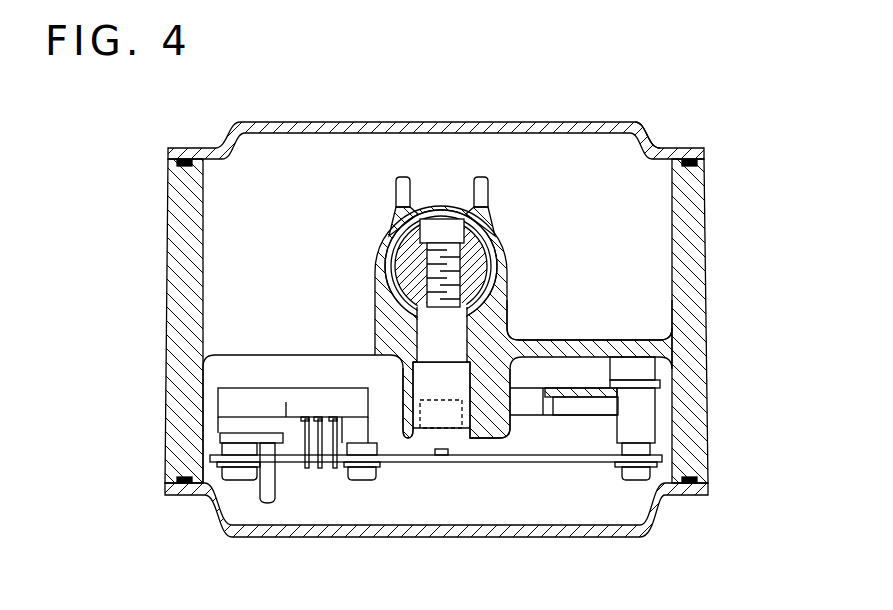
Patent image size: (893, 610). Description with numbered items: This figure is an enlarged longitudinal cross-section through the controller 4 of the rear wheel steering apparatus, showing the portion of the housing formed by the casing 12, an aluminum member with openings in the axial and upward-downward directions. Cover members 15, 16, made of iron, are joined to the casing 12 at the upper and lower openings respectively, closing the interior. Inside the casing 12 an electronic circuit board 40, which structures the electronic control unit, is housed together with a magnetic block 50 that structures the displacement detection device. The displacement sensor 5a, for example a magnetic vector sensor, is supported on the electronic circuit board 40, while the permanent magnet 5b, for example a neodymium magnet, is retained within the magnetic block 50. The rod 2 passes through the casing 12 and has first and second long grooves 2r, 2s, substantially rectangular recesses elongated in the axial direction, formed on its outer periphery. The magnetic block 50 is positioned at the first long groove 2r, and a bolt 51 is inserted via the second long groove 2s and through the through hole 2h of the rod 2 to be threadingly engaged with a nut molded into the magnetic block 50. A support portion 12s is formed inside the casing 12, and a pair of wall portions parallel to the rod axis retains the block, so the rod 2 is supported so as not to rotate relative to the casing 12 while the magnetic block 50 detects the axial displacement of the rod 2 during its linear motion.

The rod 2 is at (416, 196).
The through hole 2h is at (406, 153).
The second long groove 2s is at (462, 213).
The first long groove 2r is at (487, 212).
The controller 4 is at (627, 190).
The displacement sensor 5a is at (441, 457).
The permanent magnet 5b is at (450, 420).
The casing 12 is at (703, 344).
The support portion 12s is at (587, 343).
The cover member 15 is at (632, 128).
The cover member 16 is at (628, 532).
The electronic circuit board 40 is at (387, 462).
The magnetic block 50 is at (413, 347).
The bolt 51 is at (440, 220).